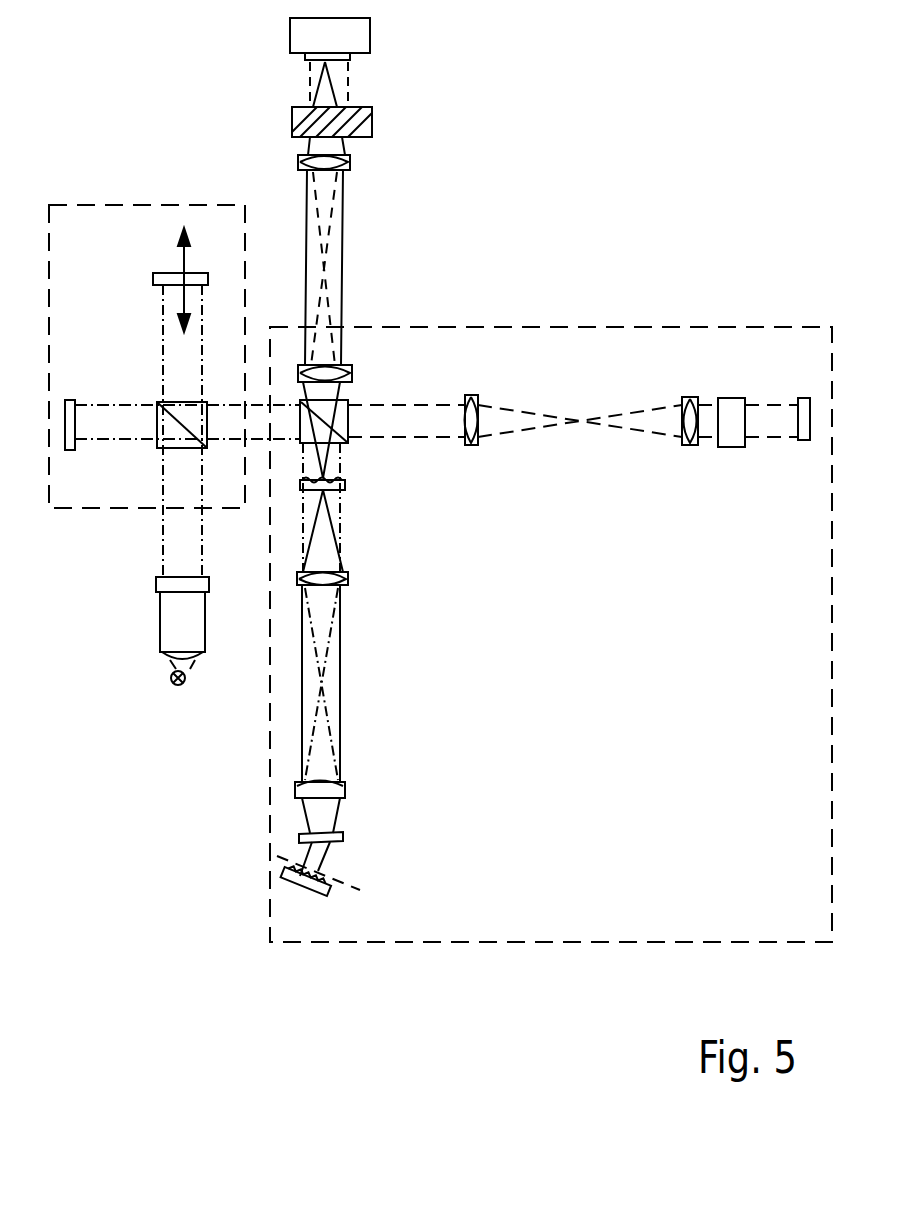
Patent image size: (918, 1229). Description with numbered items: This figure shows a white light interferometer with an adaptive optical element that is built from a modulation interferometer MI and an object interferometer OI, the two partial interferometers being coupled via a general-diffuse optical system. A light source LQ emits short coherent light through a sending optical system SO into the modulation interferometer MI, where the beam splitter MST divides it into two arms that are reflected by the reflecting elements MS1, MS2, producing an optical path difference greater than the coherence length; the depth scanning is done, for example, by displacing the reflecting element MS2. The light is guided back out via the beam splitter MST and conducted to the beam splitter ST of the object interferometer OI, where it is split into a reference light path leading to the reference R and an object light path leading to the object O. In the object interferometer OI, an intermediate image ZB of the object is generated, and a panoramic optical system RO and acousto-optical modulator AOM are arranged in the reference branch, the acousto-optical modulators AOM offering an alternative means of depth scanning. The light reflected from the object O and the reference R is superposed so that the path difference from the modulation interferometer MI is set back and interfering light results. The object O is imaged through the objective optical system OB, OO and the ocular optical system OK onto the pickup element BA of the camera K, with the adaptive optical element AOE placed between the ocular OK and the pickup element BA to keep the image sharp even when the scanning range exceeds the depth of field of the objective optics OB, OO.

The camera K is at (371, 33).
The pickup element BA is at (352, 58).
The adaptive optical element AOE is at (374, 121).
The ocular optical system OK is at (352, 165).
The objective optical system OB is at (354, 373).
The beam splitter ST is at (350, 446).
The intermediate image ZB is at (347, 485).
The panoramic optical system RO is at (485, 448).
The acousto-optical modulator AOM is at (733, 448).
The reference plane R is at (805, 442).
The reflecting element MS2 is at (151, 275).
The reflecting element MS1 is at (72, 398).
The beam splitter of modulation interferometer MST is at (158, 402).
The modulation interferometer MI is at (90, 510).
The sending optical system SO is at (152, 626).
The light source LQ is at (180, 690).
The objective optical system OO is at (352, 783).
The object O is at (290, 888).
The object interferometer OI is at (266, 944).